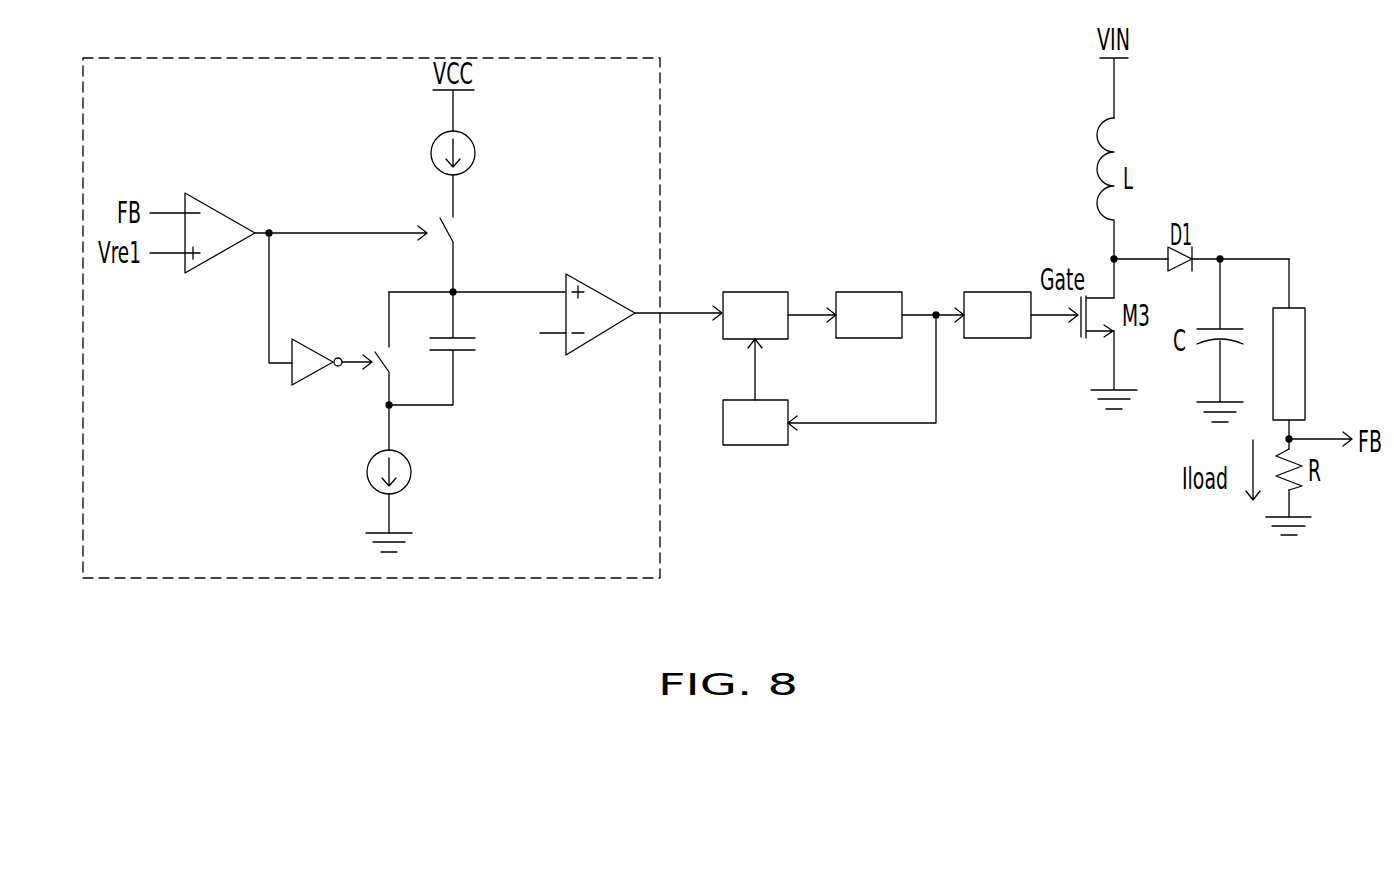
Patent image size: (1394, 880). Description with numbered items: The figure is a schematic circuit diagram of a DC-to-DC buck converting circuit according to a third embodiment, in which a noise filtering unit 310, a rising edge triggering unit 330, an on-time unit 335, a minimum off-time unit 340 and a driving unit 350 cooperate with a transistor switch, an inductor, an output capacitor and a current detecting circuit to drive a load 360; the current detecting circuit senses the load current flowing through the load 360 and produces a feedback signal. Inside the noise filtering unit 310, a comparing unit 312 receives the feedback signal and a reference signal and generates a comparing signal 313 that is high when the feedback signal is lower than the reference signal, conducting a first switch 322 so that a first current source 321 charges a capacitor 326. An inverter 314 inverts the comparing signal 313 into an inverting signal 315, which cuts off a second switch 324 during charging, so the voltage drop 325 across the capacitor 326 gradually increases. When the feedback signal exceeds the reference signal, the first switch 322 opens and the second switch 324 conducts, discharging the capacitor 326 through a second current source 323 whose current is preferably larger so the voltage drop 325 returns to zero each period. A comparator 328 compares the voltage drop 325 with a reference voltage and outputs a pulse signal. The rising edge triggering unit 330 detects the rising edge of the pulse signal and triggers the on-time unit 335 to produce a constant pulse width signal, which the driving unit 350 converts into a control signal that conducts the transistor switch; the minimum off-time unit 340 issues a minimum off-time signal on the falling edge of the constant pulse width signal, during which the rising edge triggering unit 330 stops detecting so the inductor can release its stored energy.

The noise filtering unit 310 is at (652, 128).
The comparing unit 312 is at (240, 194).
The comparing signal 313 is at (348, 220).
The inverter 314 is at (300, 372).
The inverting signal 315 is at (352, 349).
The first current source 321 is at (475, 174).
The first switch 322 is at (470, 212).
The second current source 323 is at (411, 478).
The second switch 324 is at (380, 366).
The voltage drop 325 is at (477, 276).
The capacitor 326 is at (462, 352).
The comparator 328 is at (598, 335).
The rising edge triggering unit 330 is at (776, 331).
The on-time unit 335 is at (889, 331).
The minimum off-time unit 340 is at (776, 438).
The driving unit 350 is at (1018, 331).
The load 360 is at (1305, 318).